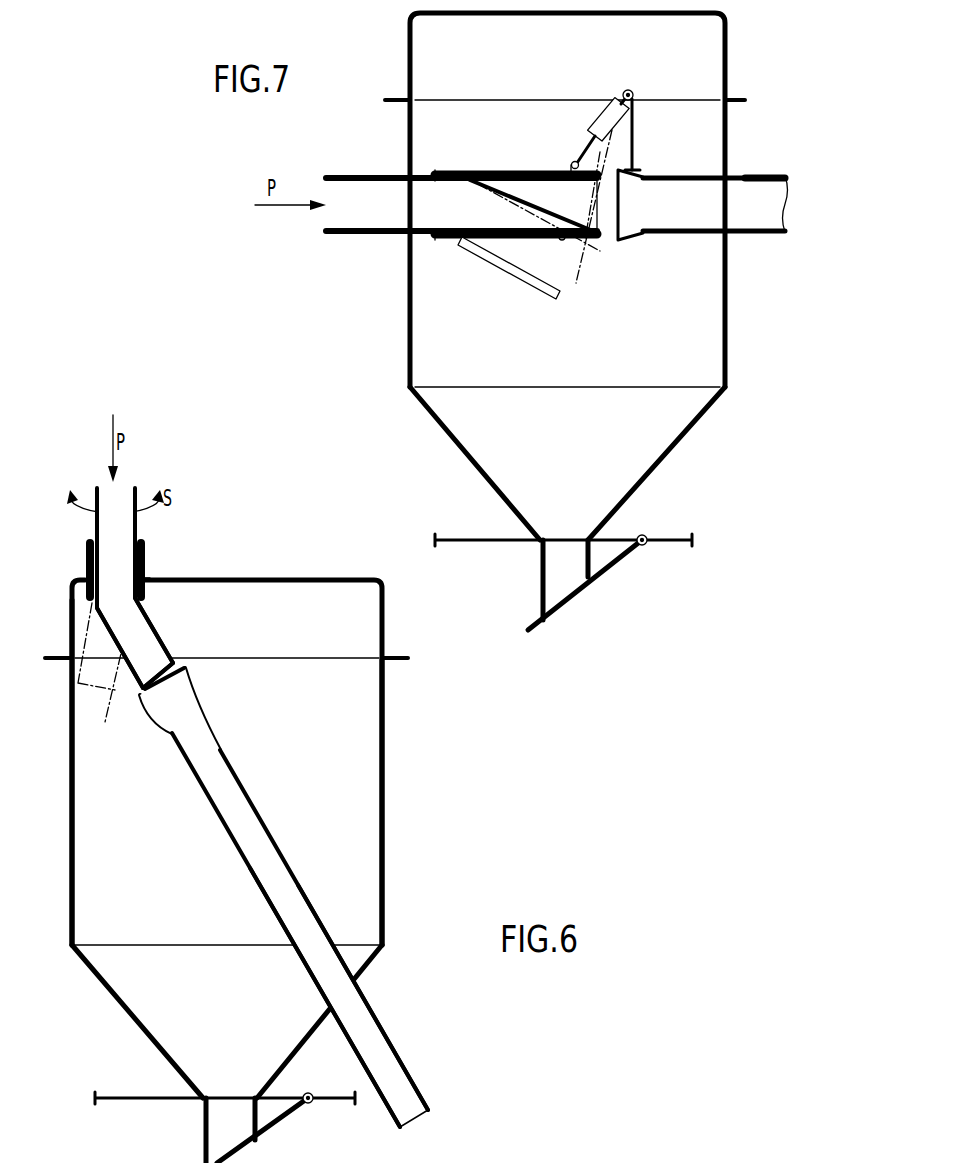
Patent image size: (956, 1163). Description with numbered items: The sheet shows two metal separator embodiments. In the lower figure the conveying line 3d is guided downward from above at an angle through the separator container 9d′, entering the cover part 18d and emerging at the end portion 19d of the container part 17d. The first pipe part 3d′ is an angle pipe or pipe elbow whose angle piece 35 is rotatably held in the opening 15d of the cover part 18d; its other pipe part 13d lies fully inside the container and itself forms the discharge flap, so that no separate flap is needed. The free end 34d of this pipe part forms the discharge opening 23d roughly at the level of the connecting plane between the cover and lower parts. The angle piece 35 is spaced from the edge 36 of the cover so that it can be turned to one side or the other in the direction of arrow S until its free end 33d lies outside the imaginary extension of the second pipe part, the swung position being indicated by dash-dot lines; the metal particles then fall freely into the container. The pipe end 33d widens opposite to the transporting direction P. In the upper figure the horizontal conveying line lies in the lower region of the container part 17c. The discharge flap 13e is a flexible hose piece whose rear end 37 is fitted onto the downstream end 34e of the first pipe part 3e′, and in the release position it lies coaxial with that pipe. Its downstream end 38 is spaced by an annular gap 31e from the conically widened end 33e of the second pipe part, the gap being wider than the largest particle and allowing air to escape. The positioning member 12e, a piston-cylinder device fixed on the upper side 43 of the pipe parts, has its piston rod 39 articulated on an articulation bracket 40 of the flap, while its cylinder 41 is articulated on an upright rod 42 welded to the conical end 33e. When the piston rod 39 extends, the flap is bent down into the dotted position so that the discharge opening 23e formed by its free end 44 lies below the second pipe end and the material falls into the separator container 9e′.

In FIG. 7, the positioning member 12e is at (611, 105).
In FIG. 7, the rod 42 is at (636, 95).
In FIG. 7, the rear end 37 is at (440, 170).
In FIG. 7, the discharge flap 13e is at (506, 168).
In FIG. 7, the piston rod 39 is at (572, 162).
In FIG. 7, the cylinder 41 is at (636, 131).
In FIG. 7, the end of second pipe part 33e is at (624, 173).
In FIG. 7, the separator container 9e′ is at (732, 128).
In FIG. 7, the upper side 43 is at (750, 175).
In FIG. 7, the articulation bracket 40 is at (573, 172).
In FIG. 7, the first pipe part 3e′ is at (348, 236).
In FIG. 7, the downstream end 34e is at (438, 241).
In FIG. 7, the downstream end of discharge flap 38 is at (563, 240).
In FIG. 7, the annular gap 31e is at (612, 237).
In FIG. 7, the free end 44 is at (543, 293).
In FIG. 7, the discharge opening 23e is at (581, 270).
In FIG. 7, the container part 17c is at (725, 361).
In FIG. 6, the cover part 18d is at (385, 619).
In FIG. 6, the edge 36 is at (71, 600).
In FIG. 6, the separator container 9d′ is at (394, 828).
In FIG. 6, the container part 17d is at (385, 877).
In FIG. 6, the end portion 19d is at (362, 966).
In FIG. 6, the free end 33d is at (190, 685).
In FIG. 6, the conveying line 3d is at (148, 528).
In FIG. 6, the angle piece 35 is at (88, 558).
In FIG. 6, the opening 15d is at (147, 578).
In FIG. 6, the first pipe part 3d′ is at (143, 623).
In FIG. 6, the pipe part forming discharge flap 13d is at (161, 648).
In FIG. 6, the discharge opening 23d is at (196, 706).
In FIG. 6, the free end 34d is at (184, 668).